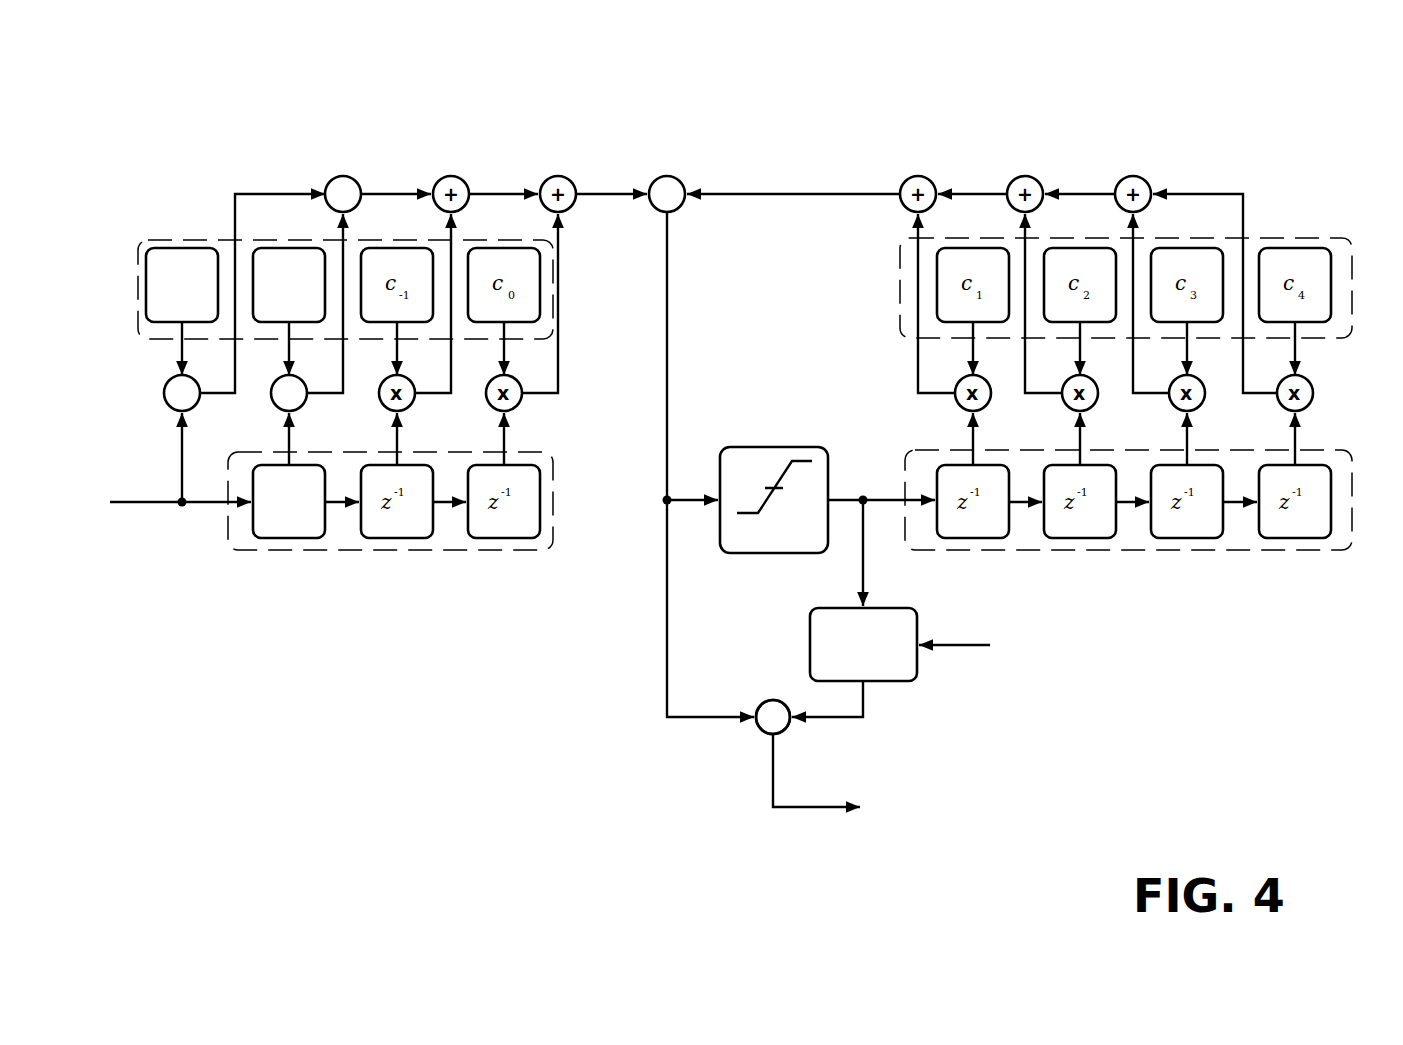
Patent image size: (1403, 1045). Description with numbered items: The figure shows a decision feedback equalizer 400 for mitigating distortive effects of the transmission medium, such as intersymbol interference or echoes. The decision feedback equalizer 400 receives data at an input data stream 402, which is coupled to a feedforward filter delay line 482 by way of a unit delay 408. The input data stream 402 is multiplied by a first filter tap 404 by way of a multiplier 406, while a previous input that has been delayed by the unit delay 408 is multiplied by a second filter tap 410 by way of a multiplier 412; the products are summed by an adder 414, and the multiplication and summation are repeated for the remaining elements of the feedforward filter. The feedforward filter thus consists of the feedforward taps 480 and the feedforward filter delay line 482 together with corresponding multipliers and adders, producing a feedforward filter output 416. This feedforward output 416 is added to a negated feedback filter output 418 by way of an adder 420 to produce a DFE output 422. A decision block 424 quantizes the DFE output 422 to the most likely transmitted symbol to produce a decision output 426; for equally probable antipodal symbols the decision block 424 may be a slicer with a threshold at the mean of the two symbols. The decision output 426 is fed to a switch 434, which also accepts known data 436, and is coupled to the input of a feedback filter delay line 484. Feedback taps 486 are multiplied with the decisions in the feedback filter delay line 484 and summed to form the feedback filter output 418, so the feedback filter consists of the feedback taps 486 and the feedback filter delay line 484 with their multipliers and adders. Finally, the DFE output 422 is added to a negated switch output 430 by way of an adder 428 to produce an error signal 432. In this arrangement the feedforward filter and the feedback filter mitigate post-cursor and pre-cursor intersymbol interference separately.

The decision feedback equalizer 400 is at (870, 135).
The input data stream 402 is at (122, 502).
The first filter tap 404 is at (146, 285).
The multiplier 406 is at (164, 388).
The unit delay 408 is at (275, 540).
The second filter tap 410 is at (290, 248).
The multiplier 412 is at (271, 396).
The adder 414 is at (345, 176).
The feedforward filter output 416 is at (600, 192).
The feedback filter output 418 is at (760, 192).
The adder 420 is at (678, 176).
The DFE output 422 is at (667, 282).
The decision block 424 is at (768, 447).
The decision output 426 is at (860, 498).
The adder 428 is at (762, 732).
The switch output 430 is at (785, 735).
The error signal 432 is at (815, 812).
The switch 434 is at (906, 610).
The known data 436 is at (965, 647).
The feedforward taps 480 is at (170, 240).
The feedforward filter delay line 482 is at (225, 530).
The feedback filter delay line 484 is at (1345, 553).
The feedback taps 486 is at (1298, 238).